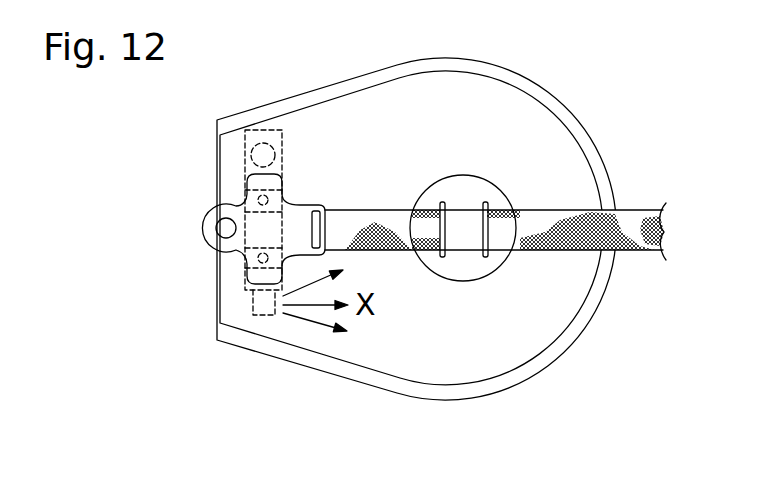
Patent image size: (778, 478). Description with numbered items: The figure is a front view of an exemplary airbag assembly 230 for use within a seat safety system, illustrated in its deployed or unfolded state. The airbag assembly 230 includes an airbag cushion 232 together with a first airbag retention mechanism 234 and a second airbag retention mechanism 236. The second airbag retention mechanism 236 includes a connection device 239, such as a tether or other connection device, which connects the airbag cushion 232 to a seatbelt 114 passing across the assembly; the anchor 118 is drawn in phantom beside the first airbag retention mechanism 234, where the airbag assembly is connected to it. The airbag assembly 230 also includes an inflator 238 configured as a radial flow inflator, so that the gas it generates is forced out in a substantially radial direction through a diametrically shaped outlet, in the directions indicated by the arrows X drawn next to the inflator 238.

The strap 114 is at (662, 232).
The anchor 118 is at (300, 212).
The airbag assembly 230 is at (196, 137).
The airbag cushion 232 is at (513, 328).
The first airbag retention mechanism 234 is at (234, 256).
The second airbag retention mechanism 236 is at (468, 215).
The inflator 238 is at (258, 222).
The connection device 239 is at (459, 258).